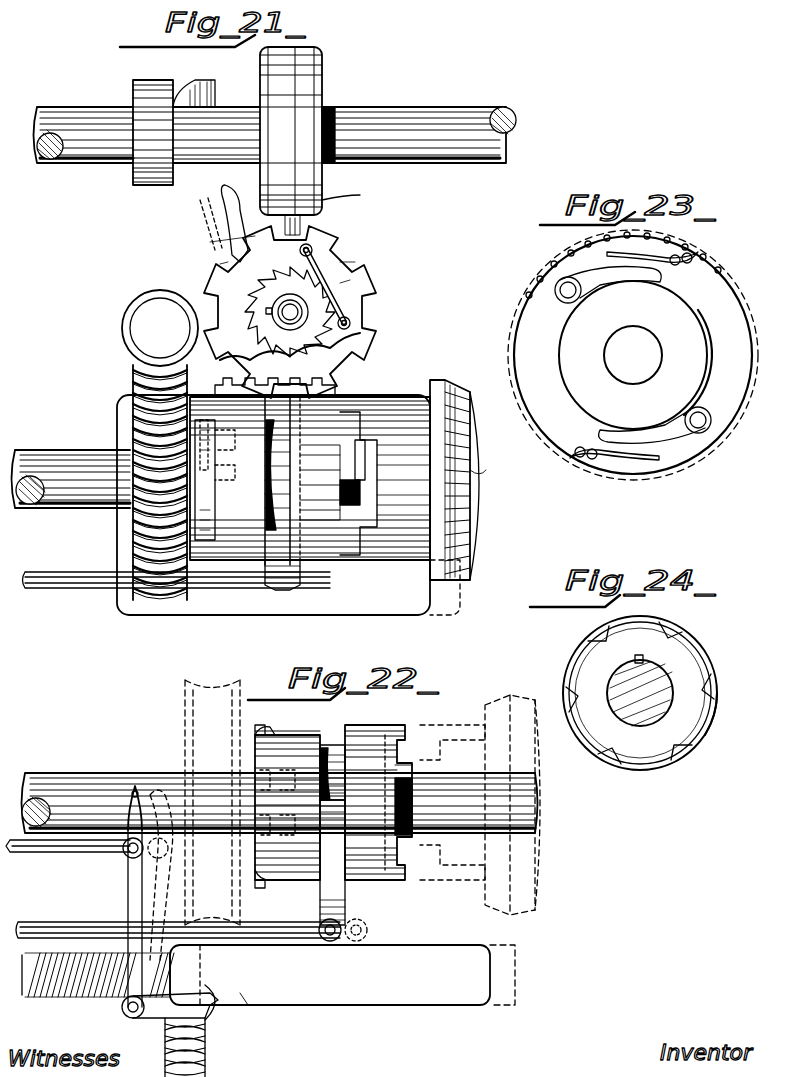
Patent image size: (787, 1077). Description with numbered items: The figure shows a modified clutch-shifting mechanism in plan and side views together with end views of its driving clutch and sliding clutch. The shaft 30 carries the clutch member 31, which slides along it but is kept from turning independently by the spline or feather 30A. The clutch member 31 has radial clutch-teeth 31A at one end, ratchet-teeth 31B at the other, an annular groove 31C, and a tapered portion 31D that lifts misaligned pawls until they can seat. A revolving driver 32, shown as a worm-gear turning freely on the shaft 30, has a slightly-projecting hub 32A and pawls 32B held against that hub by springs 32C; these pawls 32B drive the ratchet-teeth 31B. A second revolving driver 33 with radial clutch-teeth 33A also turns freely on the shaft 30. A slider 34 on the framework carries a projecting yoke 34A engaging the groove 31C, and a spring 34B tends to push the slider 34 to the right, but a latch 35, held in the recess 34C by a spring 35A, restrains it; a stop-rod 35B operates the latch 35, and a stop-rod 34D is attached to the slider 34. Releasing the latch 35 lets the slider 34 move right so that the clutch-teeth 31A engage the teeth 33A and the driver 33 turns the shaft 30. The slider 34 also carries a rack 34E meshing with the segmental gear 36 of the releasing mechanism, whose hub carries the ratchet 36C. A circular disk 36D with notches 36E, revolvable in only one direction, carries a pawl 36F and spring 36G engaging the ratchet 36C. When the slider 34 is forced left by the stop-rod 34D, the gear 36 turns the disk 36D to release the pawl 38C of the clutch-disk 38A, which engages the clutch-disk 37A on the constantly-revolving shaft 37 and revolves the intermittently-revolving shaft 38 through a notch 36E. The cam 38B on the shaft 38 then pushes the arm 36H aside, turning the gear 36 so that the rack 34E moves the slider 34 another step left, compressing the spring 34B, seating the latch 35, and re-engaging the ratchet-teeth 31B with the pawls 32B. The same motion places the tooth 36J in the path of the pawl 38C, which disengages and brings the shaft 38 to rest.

In FIG. 21, the shaft 30 is at (68, 460).
In FIG. 24, the shaft 30 is at (640, 693).
In FIG. 22, the shaft 30 is at (83, 790).
In FIG. 24, the spline or feather 30A is at (636, 660).
In FIG. 21, the clutch member 31 is at (310, 480).
In FIG. 24, the clutch member 31 is at (640, 693).
In FIG. 22, the clutch member 31 is at (333, 806).
In FIG. 21, the radial clutch-teeth 31A is at (362, 445).
In FIG. 22, the radial clutch-teeth 31A is at (400, 780).
In FIG. 24, the ratchet-teeth 31B is at (690, 748).
In FIG. 22, the ratchet-teeth 31B is at (262, 745).
In FIG. 21, the annular groove 31C is at (285, 498).
In FIG. 22, the annular groove 31C is at (328, 770).
In FIG. 21, the tapered portion 31D is at (205, 545).
In FIG. 24, the tapered portion 31D is at (706, 732).
In FIG. 22, the tapered portion 31D is at (268, 880).
In FIG. 21, the revolving driver 32 is at (160, 395).
In FIG. 23, the revolving driver 32 is at (633, 355).
In FIG. 22, the revolving driver 32 is at (212, 802).
In FIG. 23, the projecting hub 32A is at (650, 355).
In FIG. 21, the pawls 32B is at (207, 458).
In FIG. 23, the pawls 32B is at (595, 282).
In FIG. 21, the springs 32C is at (205, 500).
In FIG. 23, the springs 32C is at (675, 250).
In FIG. 21, the revolving driver 33 is at (434, 480).
In FIG. 22, the revolving driver 33 is at (470, 730).
In FIG. 21, the radial clutch-teeth 33A is at (370, 505).
In FIG. 23, the radial clutch-teeth 33A is at (490, 478).
In FIG. 22, the radial clutch-teeth 33A is at (520, 755).
In FIG. 21, the slider 34 is at (288, 505).
In FIG. 22, the slider 34 is at (342, 975).
In FIG. 21, the projecting yoke 34A is at (300, 565).
In FIG. 22, the projecting yoke 34A is at (385, 880).
In FIG. 22, the spring 34B is at (52, 992).
In FIG. 22, the recess 34C is at (245, 1005).
In FIG. 21, the stop-rod 34D is at (62, 578).
In FIG. 22, the stop-rod 34D is at (55, 908).
In FIG. 21, the rack 34E is at (340, 365).
In FIG. 22, the latch 35 is at (130, 897).
In FIG. 22, the spring 35A is at (200, 1050).
In FIG. 22, the stop-rod 35B is at (62, 852).
In FIG. 21, the segmental gear 36 is at (360, 340).
In FIG. 21, the ratchet 36C is at (268, 318).
In FIG. 21, the circular disk 36D is at (338, 286).
In FIG. 21, the notches 36E is at (228, 262).
In FIG. 21, the pawl 36F is at (345, 312).
In FIG. 21, the spring 36G is at (332, 268).
In FIG. 21, the arm 36H is at (225, 198).
In FIG. 21, the tooth 36J is at (258, 236).
In FIG. 21, the constantly-revolving shaft 37 is at (415, 110).
In FIG. 21, the clutch-disk 37A is at (310, 80).
In FIG. 21, the intermittently-revolving shaft 38 is at (88, 115).
In FIG. 21, the clutch-disk 38A is at (265, 70).
In FIG. 21, the cam 38B is at (150, 88).
In FIG. 21, the pawl 38C is at (360, 188).